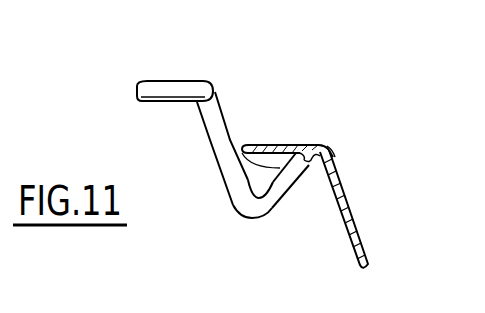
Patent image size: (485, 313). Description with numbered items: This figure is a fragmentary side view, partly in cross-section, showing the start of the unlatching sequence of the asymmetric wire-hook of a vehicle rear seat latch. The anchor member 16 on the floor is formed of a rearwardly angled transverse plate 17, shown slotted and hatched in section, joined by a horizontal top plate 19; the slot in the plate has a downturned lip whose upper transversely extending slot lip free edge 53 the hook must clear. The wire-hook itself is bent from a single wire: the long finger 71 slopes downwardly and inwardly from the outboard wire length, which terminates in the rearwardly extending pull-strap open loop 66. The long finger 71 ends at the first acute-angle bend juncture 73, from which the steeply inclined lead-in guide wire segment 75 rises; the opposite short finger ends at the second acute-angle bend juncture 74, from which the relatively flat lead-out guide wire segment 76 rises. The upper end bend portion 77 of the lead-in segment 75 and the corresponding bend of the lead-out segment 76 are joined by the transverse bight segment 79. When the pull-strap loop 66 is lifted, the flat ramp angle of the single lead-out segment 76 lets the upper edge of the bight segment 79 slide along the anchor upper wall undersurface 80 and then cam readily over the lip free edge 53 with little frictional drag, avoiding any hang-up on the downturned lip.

The anchor member 16 is at (372, 209).
The rearwardly angled transversely extending plate 17 is at (343, 210).
The horizontal top plate 19 is at (308, 142).
The slot lip free edge 53 is at (293, 154).
The pull-strap open loop 66 is at (162, 83).
The long finger 71 is at (212, 138).
The first acute-angle bend juncture 73 is at (253, 218).
The second acute-angle bend juncture 74 is at (246, 175).
The lead-in guide wire segment 75 is at (290, 203).
The lead-out guide wire segment 76 is at (276, 148).
The upper end bend portion 77 is at (307, 160).
The bight segment 79 is at (330, 152).
The anchor upper wall undersurface 80 is at (293, 143).